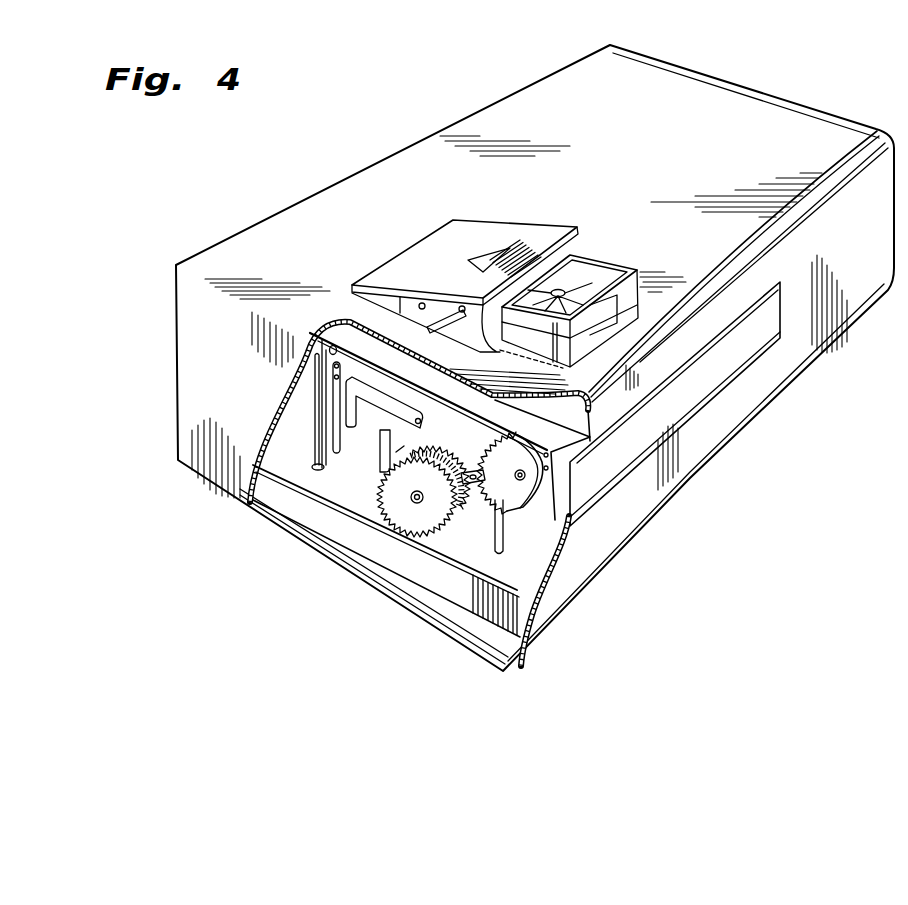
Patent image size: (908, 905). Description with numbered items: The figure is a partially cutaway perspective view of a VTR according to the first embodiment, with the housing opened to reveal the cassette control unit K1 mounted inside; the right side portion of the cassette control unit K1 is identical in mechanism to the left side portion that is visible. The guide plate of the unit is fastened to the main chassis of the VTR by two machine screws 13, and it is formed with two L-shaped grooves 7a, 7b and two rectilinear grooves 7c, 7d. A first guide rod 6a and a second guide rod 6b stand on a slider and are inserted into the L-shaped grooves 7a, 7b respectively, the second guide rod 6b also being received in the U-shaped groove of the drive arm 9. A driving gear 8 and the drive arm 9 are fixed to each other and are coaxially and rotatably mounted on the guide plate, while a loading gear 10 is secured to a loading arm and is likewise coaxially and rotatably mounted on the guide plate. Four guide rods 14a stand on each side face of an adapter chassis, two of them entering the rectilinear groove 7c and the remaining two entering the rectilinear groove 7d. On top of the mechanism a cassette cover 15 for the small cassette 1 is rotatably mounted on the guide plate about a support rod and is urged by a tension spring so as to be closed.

The small cassette 1 is at (591, 273).
The cassette cover 15 is at (490, 232).
The machine screws 13 is at (223, 497).
The cassette control unit K1 is at (225, 599).
The L-shaped groove 7a is at (380, 457).
The L-shaped groove 7b is at (317, 467).
The rectilinear groove 7c is at (345, 407).
The rectilinear groove 7d is at (508, 533).
The guide rods 14a is at (332, 366).
The driving gear 8 is at (403, 512).
The drive arm 9 is at (450, 537).
The loading gear 10 is at (522, 498).
The first guide rod 6a is at (405, 448).
The second guide rod 6b is at (468, 468).